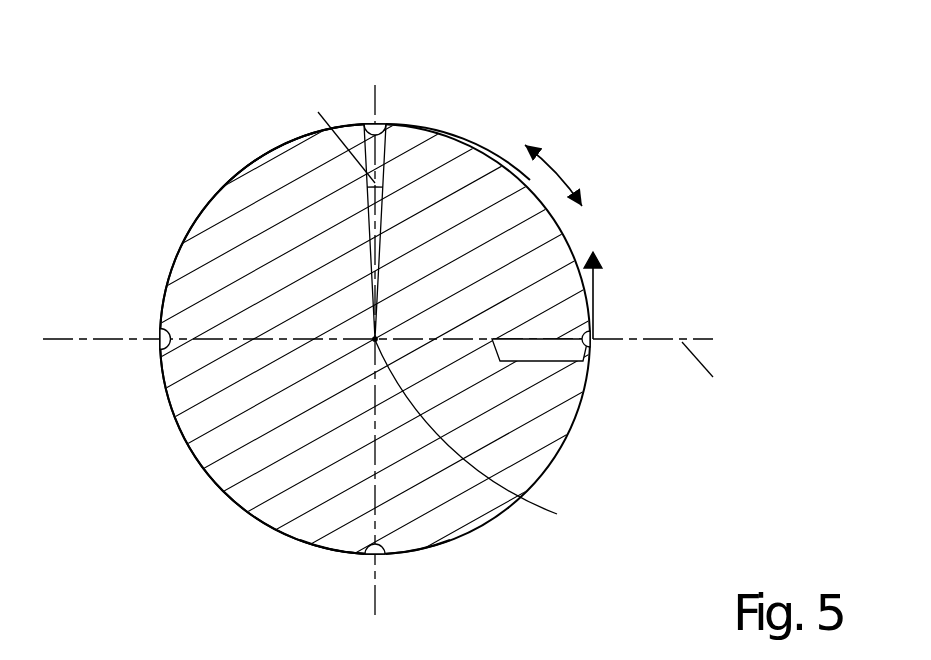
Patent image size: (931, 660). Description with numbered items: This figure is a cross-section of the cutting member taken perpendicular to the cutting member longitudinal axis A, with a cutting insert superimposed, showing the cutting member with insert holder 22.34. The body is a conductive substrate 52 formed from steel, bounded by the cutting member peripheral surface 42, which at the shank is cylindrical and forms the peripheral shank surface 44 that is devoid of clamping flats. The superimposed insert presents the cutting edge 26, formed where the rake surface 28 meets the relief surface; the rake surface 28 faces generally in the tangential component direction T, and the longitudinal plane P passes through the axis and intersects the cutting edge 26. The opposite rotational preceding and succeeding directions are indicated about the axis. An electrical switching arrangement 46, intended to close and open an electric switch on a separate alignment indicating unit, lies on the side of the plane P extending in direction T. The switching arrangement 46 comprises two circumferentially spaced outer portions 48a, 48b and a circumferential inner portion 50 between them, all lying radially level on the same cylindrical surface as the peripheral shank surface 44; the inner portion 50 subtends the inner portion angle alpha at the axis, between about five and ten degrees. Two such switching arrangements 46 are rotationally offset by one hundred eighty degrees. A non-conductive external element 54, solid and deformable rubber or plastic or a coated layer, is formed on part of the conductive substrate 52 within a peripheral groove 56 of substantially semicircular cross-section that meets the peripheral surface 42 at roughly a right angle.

The cutting member and insert holder 22.34 is at (637, 152).
The cutting edge 26 is at (593, 345).
The rake surface 28 is at (533, 338).
The cutting member peripheral surface 42 is at (570, 438).
The peripheral shank surface 44 is at (218, 188).
The electrical switching arrangement 46 is at (430, 62).
The rotationally preceding circumferential outer portion 48a is at (302, 128).
The rotationally succeeding circumferential outer portion 48b is at (417, 148).
The circumferential inner portion 50 is at (386, 124).
The conductive substrate 52 is at (200, 393).
The non-conductive external element 54 is at (358, 82).
The peripheral groove 56 is at (112, 352).